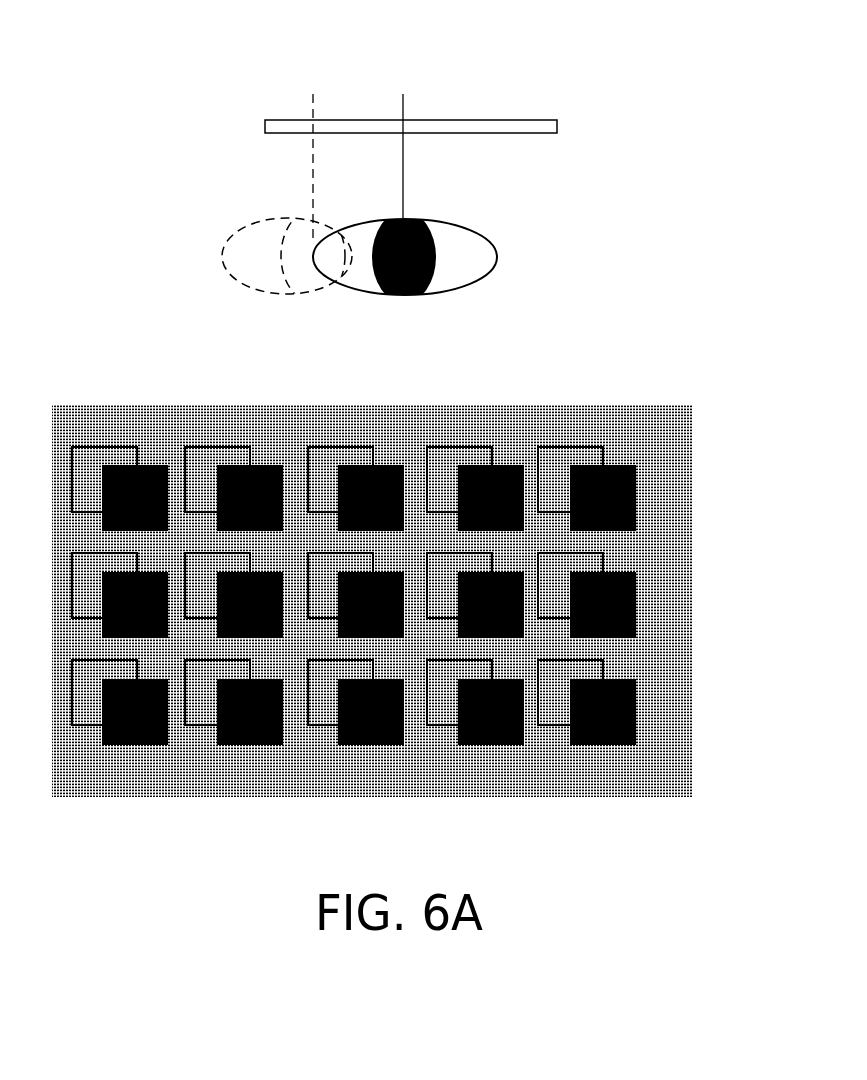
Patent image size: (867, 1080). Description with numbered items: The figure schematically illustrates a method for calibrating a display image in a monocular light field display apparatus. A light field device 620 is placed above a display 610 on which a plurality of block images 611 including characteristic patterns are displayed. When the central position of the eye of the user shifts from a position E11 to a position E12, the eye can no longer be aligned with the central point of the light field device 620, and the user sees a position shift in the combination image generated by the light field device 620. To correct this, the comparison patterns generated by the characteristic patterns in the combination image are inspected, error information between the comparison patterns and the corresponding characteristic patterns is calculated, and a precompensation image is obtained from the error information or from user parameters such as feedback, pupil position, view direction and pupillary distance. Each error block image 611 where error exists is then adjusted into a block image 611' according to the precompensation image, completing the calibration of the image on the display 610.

The display 610 is at (667, 405).
The block image 611 is at (369, 594).
The adjusted block image 611' is at (337, 594).
The light field device 620 is at (532, 120).
The eye position E11 is at (403, 83).
The shifted eye position E12 is at (313, 83).